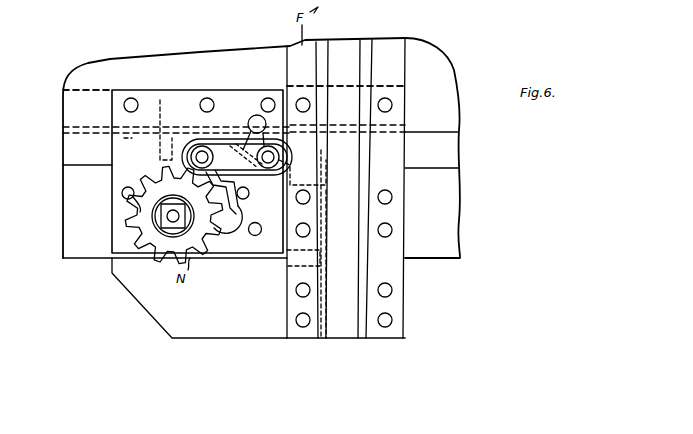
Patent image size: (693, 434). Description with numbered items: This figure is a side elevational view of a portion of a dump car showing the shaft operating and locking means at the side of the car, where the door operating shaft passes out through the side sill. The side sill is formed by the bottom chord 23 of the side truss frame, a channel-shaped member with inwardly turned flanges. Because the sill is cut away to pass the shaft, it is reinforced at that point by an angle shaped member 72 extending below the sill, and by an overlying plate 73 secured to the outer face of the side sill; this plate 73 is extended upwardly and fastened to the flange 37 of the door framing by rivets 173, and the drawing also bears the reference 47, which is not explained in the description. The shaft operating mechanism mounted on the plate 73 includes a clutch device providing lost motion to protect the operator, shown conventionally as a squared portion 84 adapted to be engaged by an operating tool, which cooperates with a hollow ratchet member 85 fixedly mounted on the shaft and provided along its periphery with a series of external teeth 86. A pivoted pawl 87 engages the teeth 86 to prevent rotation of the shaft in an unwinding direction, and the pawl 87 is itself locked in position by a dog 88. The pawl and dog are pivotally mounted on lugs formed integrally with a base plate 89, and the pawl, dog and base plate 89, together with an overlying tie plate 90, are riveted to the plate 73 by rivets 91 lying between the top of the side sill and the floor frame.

The bottom chord 23 is at (460, 198).
The flange of the door framing 37 is at (388, 80).
The mounting plate 47 is at (197, 171).
The angle shaped member 72 is at (258, 327).
The overlying plate 73 is at (112, 233).
The squared portion 84 is at (162, 203).
The hollow ratchet member 85 is at (140, 210).
The external teeth 86 is at (170, 176).
The pivoted pawl 87 is at (260, 218).
The dog 88 is at (254, 116).
The base plate 89 is at (203, 140).
The tie plate 90 is at (283, 152).
The rivets 91 is at (270, 164).
The rivets 173 is at (132, 98).